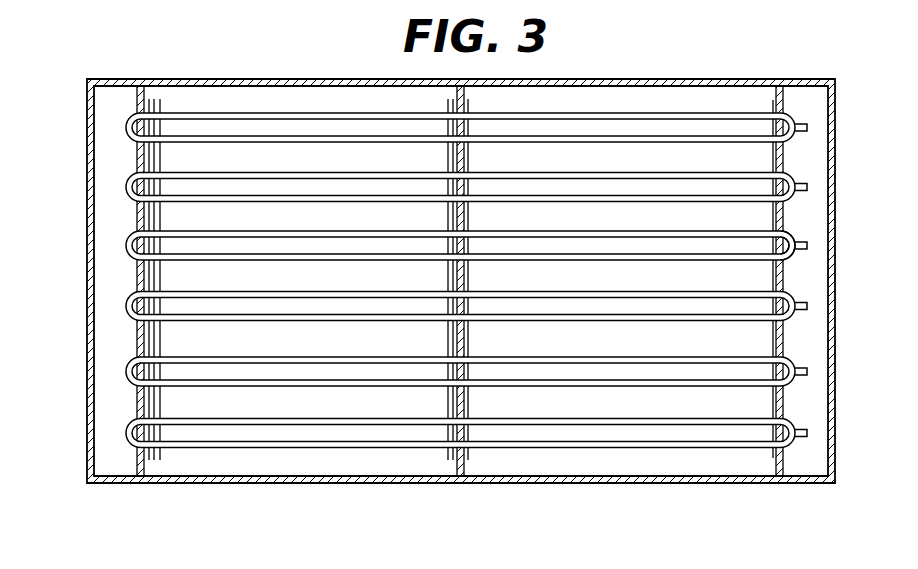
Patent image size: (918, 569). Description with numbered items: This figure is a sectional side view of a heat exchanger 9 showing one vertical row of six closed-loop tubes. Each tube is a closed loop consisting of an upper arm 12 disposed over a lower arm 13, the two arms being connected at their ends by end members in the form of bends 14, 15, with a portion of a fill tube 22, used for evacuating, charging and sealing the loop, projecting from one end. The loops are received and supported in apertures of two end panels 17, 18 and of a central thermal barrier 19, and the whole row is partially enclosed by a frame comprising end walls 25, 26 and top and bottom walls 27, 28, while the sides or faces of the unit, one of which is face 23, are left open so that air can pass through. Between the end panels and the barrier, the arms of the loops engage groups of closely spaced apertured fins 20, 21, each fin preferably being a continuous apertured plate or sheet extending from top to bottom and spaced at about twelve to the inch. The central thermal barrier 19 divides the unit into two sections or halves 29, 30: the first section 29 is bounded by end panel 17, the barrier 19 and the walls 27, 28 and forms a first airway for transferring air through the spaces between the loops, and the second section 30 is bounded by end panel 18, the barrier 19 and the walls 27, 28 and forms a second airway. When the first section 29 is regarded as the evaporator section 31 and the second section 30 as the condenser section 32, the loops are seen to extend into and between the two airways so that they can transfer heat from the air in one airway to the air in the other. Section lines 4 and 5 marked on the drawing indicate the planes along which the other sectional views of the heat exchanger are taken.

The section line 4— 4 is at (44, 52).
The section line 5— 5 is at (822, 80).
The heat exchanger 9 is at (352, 484).
The upper arm 12 is at (185, 300).
The lower arm 13 is at (180, 327).
The bend 14 is at (128, 246).
The bend 15 is at (798, 260).
The end panel 17 is at (137, 215).
The end panel 18 is at (783, 213).
The central thermal barrier 19 is at (468, 96).
The fins 20 is at (165, 105).
The fins 21 is at (770, 100).
The fill tube 22 is at (806, 240).
The side or face 23 is at (250, 458).
The end wall 25 is at (86, 203).
The end wall 26 is at (836, 180).
The top wall 27 is at (243, 60).
The bottom wall 28 is at (211, 484).
The section or half 29 is at (322, 98).
The section or half 30 is at (540, 130).
The evaporator section 31 is at (353, 157).
The condenser section 32 is at (577, 157).